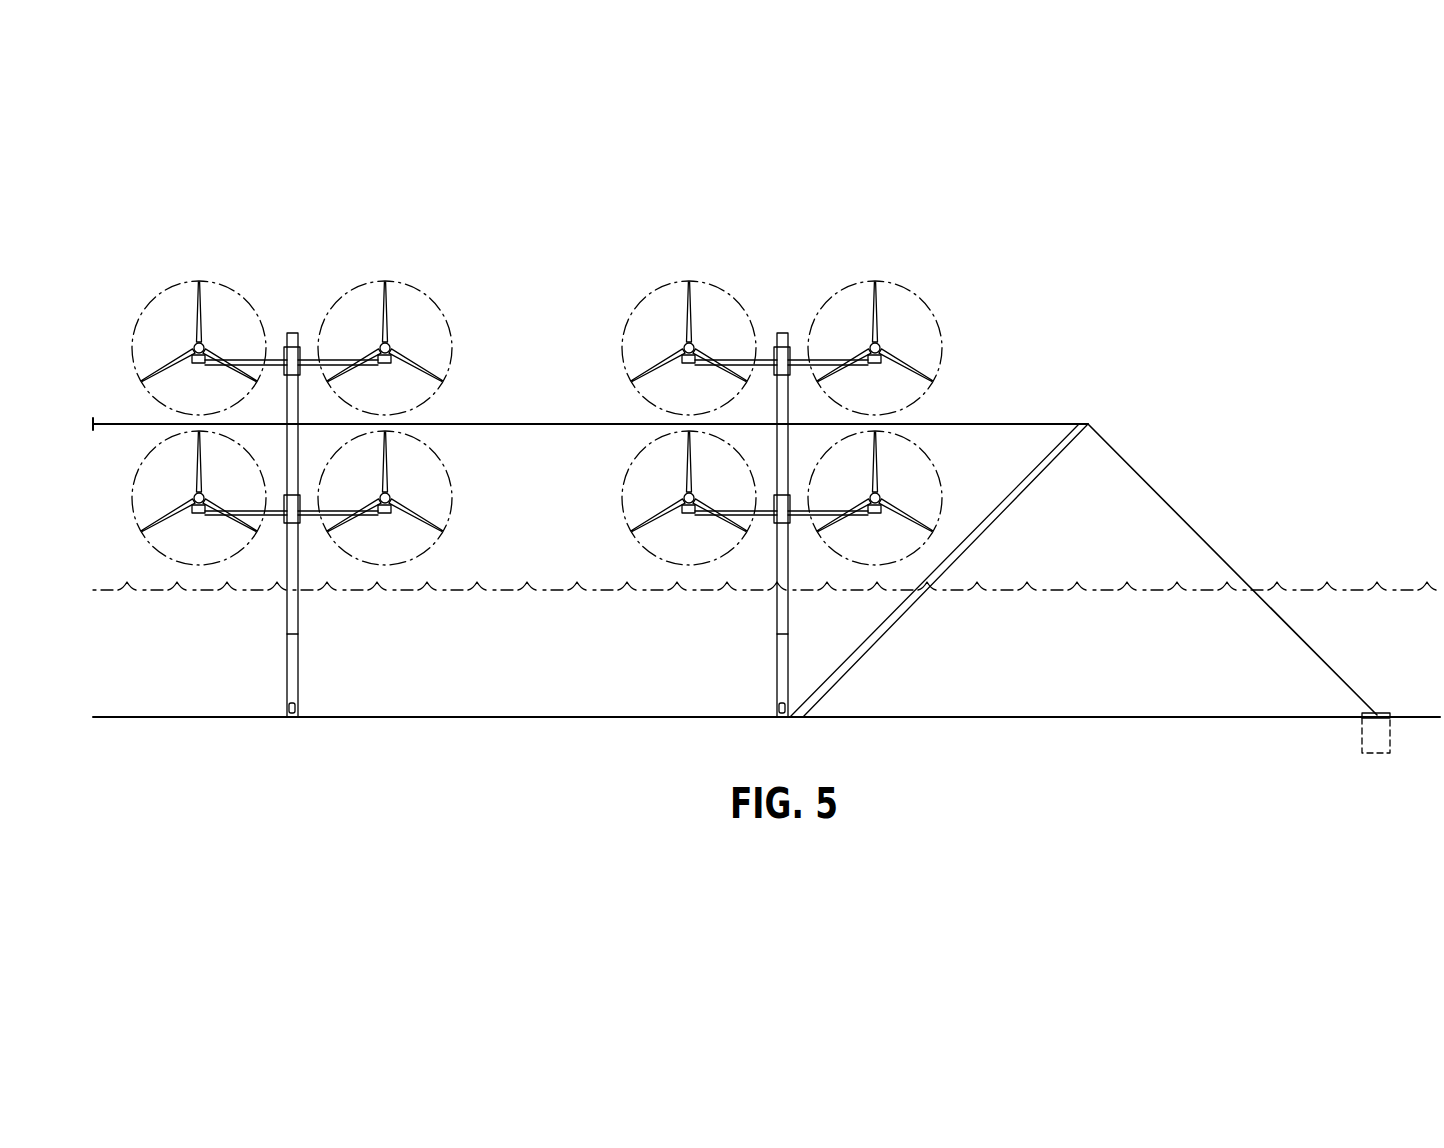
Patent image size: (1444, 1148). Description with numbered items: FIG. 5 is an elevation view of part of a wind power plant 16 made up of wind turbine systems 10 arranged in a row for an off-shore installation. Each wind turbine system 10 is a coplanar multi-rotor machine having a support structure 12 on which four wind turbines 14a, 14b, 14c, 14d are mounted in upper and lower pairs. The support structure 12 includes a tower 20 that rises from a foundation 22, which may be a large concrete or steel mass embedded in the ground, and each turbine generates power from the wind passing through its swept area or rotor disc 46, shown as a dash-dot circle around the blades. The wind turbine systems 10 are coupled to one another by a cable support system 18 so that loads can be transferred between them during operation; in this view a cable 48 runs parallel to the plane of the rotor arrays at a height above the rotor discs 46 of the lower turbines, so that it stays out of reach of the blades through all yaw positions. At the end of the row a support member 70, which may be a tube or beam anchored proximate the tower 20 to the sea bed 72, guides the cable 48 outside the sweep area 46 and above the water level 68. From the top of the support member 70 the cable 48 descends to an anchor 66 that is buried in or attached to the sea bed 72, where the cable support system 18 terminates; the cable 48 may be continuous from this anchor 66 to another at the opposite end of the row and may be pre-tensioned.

The wind turbine system 10 is at (131, 277).
The support structure 12 is at (292, 331).
The wind turbine 14a is at (124, 351).
The wind turbine 14b is at (459, 351).
The wind turbine 14c is at (124, 500).
The wind turbine 14d is at (459, 500).
The wind power plant 16 is at (1118, 237).
The cable support system 18 is at (1203, 524).
The tower 20 is at (286, 648).
The foundation 22 is at (285, 715).
The rotor disc 46 is at (134, 330).
The cable 48 is at (533, 424).
The anchor 66 is at (1388, 712).
The water level 68 is at (1326, 588).
The support member 70 is at (1004, 514).
The sea bed 72 is at (1040, 716).